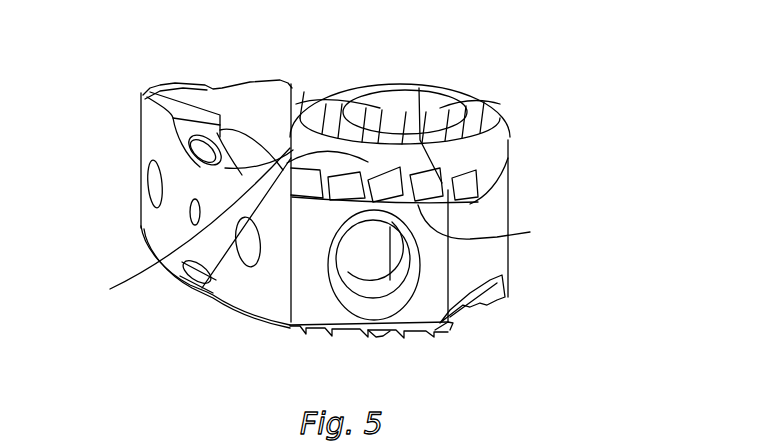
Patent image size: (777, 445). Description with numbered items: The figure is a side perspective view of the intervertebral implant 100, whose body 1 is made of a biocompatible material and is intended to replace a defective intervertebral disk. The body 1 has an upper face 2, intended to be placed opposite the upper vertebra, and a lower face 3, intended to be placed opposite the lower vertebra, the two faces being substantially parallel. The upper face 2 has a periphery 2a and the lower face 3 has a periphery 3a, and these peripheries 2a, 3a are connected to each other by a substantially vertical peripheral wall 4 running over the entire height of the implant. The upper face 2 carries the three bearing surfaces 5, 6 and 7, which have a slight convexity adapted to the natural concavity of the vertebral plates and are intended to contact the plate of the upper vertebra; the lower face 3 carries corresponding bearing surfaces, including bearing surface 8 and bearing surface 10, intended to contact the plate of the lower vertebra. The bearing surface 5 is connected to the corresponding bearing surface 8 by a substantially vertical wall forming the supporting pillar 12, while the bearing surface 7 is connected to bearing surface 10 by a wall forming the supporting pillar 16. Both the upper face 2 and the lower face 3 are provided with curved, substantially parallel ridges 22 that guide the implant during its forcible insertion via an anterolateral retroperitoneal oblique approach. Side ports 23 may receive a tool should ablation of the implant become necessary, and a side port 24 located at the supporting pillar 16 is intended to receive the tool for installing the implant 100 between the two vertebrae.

The implant 100 is at (556, 196).
The body 1 is at (130, 181).
The upper face 2 is at (346, 79).
The periphery 2a is at (440, 82).
The lower face 3 is at (239, 329).
The periphery 3a is at (453, 323).
The peripheral wall 4 is at (154, 229).
The bearing surface 5 is at (490, 127).
The bearing surface 6 is at (188, 82).
The bearing surface 7 is at (530, 232).
The bearing surface 8 is at (508, 297).
The bearing surface 10 is at (383, 336).
The supporting pillar 12 is at (509, 182).
The supporting pillar 16 is at (312, 290).
The ridges 22 is at (186, 225).
The side ports 23 is at (152, 172).
The side port 24 is at (357, 267).